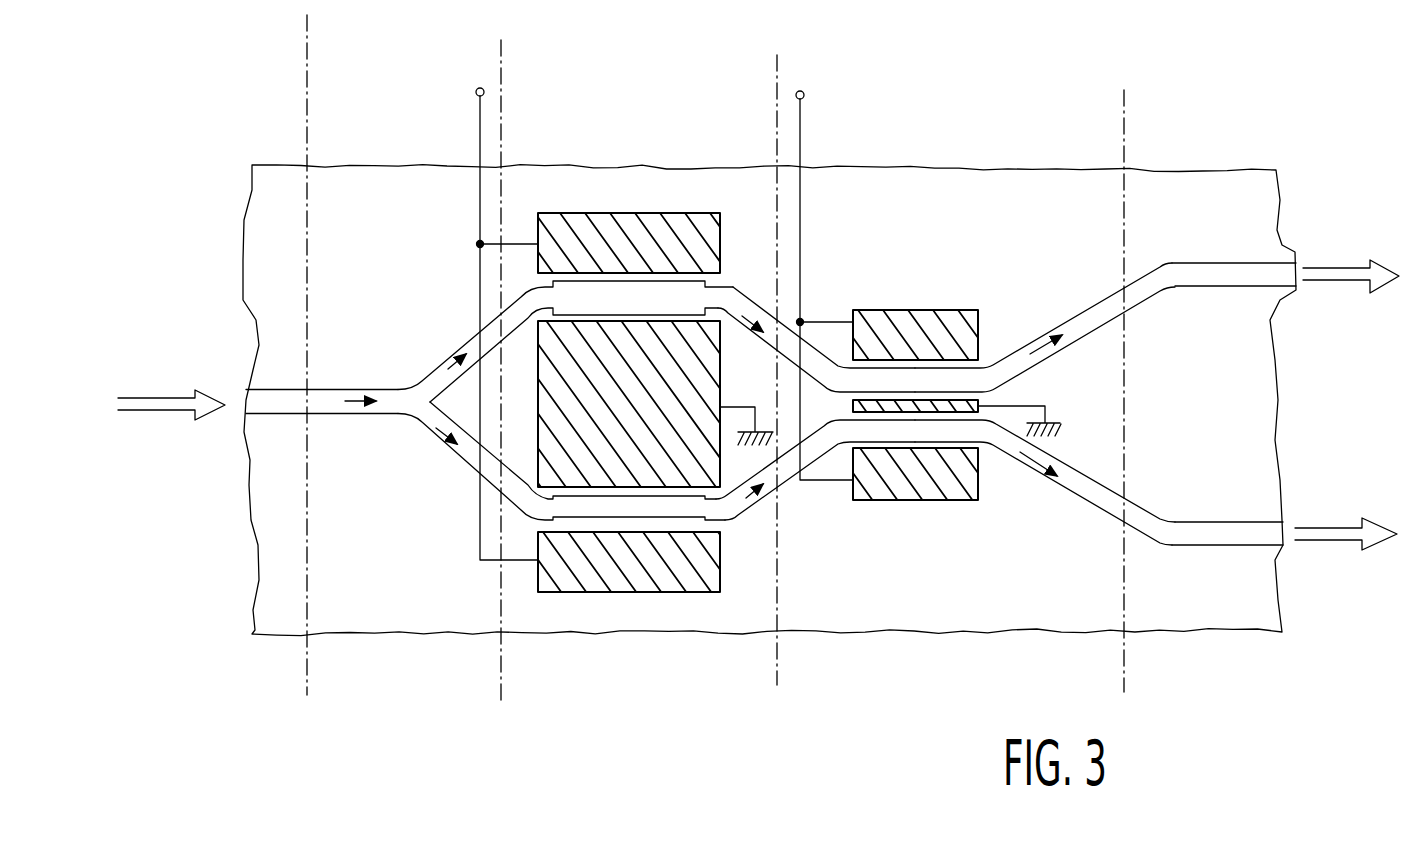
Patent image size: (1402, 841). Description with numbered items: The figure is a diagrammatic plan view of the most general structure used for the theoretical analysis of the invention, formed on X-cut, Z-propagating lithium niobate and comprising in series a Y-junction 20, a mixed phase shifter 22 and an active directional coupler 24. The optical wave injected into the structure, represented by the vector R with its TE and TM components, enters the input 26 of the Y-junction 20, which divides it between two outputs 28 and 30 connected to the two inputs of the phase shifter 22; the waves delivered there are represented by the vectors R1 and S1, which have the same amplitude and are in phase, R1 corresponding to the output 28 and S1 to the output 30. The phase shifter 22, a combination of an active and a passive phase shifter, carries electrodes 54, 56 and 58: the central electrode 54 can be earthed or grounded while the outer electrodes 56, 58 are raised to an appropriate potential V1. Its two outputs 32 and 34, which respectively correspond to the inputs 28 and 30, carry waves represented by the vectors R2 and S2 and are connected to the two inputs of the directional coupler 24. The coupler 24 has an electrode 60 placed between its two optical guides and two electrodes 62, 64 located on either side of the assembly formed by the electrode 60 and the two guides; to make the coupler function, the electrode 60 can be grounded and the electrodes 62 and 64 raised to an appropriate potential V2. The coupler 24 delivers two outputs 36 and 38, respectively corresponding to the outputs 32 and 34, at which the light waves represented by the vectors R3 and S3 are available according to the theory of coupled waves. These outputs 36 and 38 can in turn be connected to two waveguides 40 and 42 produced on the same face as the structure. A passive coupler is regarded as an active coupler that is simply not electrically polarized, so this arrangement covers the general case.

The Y-junction 20 is at (420, 158).
The phase shifter 22 is at (672, 153).
The directional coupler 24 is at (985, 159).
The input 26 is at (292, 412).
The output 28 is at (468, 340).
The output 30 is at (466, 462).
The output 32 is at (735, 294).
The output 34 is at (740, 515).
The output 36 is at (1093, 308).
The output 38 is at (1082, 498).
The waveguide 40 is at (1273, 272).
The waveguide 42 is at (1250, 538).
The electrode 54 is at (563, 368).
The electrode 56 is at (587, 232).
The electrode 58 is at (585, 574).
The electrode 60 is at (853, 405).
The electrode 62 is at (892, 322).
The electrode 64 is at (927, 485).
The vector R is at (338, 400).
The vector R1 is at (440, 364).
The vector R2 is at (743, 336).
The vector R3 is at (1050, 355).
The vector S1 is at (433, 437).
The vector S2 is at (757, 504).
The vector S3 is at (1038, 452).
The potential V1 is at (495, 303).
The potential V2 is at (821, 263).